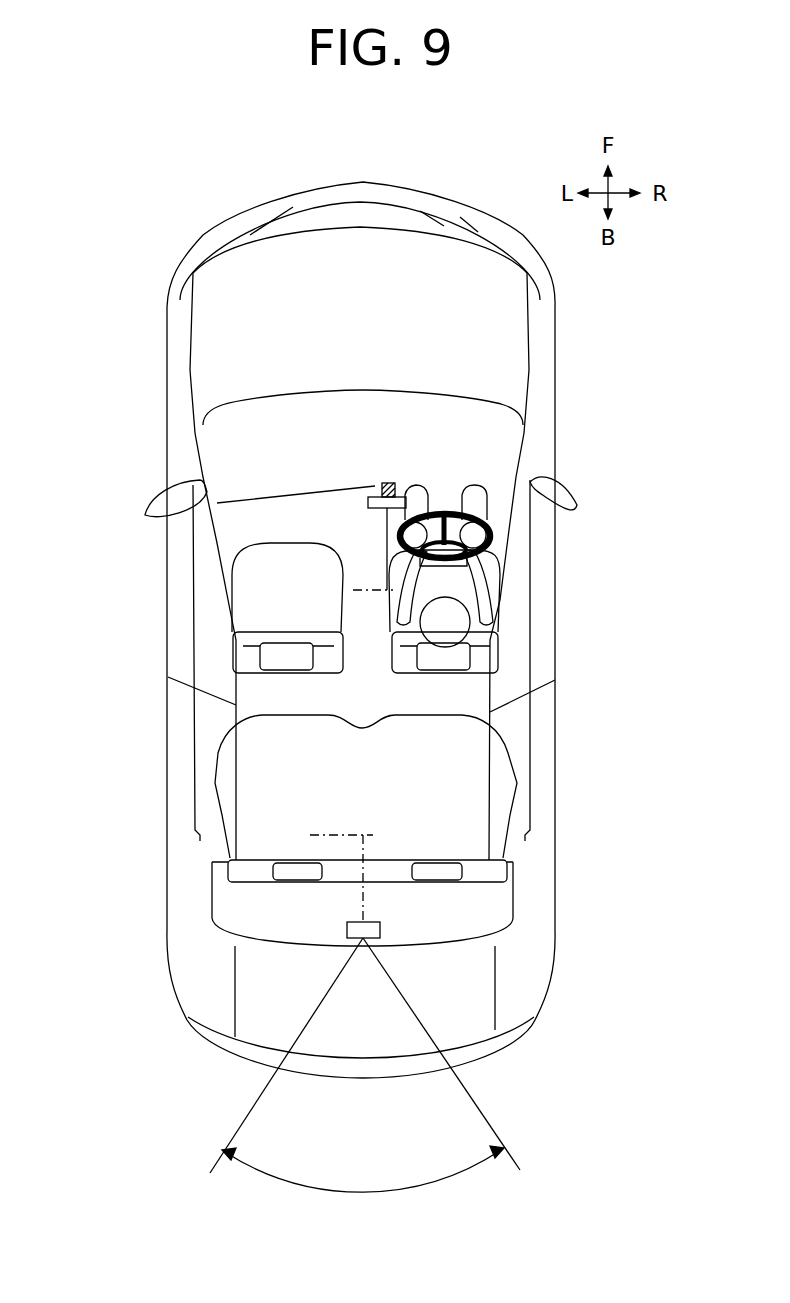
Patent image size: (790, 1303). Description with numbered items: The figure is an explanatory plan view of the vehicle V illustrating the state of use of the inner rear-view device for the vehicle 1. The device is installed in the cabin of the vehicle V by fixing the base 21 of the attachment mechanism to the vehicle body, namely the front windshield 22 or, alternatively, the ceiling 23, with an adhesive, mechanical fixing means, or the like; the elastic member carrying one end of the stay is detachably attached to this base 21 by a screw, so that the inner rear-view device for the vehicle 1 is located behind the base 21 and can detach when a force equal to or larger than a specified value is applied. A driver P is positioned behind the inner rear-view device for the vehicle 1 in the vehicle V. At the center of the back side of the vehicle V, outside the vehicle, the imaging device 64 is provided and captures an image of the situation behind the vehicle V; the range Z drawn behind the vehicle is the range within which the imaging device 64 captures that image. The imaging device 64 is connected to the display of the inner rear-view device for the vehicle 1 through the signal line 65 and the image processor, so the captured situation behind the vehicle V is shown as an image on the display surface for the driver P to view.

The inner rear-view device for the vehicle 1 is at (370, 503).
The base 21 is at (398, 486).
The front windshield 22 is at (413, 448).
The ceiling 23 is at (502, 550).
The imaging device 64 is at (347, 922).
The signal line 65 is at (390, 526).
The driver P is at (480, 584).
The vehicle V is at (562, 707).
The range Z is at (363, 1196).